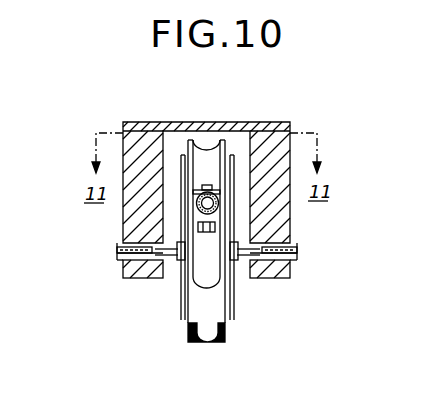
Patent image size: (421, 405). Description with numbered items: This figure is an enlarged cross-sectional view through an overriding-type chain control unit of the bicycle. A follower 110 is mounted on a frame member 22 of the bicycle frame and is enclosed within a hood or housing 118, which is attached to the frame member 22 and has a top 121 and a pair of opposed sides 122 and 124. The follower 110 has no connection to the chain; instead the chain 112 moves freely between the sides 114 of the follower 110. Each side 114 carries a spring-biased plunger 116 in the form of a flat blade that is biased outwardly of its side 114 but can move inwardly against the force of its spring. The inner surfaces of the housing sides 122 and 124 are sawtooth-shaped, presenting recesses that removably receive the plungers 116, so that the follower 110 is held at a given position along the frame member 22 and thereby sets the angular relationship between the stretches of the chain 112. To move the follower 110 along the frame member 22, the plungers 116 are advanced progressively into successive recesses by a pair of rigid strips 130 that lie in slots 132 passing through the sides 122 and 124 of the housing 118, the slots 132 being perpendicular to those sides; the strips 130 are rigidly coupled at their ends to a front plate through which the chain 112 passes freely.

The frame member 22 is at (216, 198).
The follower 110 is at (225, 260).
The chain 112 is at (202, 233).
The side 114 is at (187, 313).
The spring-biased plunger 116 is at (178, 274).
The housing 118 is at (211, 159).
The top 121 is at (193, 121).
The side 122 is at (123, 227).
The side 124 is at (290, 212).
The rigid strip 130 is at (117, 250).
The slot 132 is at (124, 259).